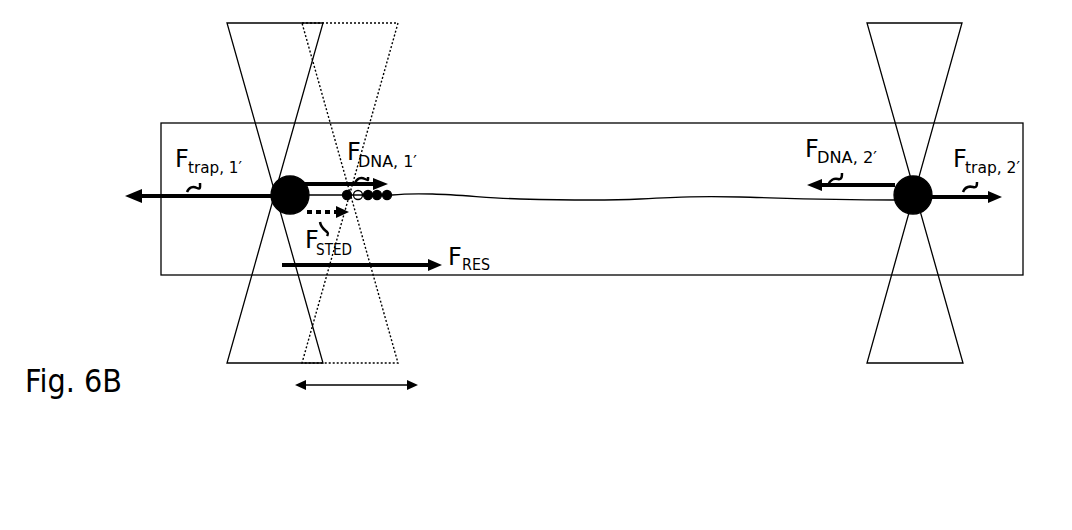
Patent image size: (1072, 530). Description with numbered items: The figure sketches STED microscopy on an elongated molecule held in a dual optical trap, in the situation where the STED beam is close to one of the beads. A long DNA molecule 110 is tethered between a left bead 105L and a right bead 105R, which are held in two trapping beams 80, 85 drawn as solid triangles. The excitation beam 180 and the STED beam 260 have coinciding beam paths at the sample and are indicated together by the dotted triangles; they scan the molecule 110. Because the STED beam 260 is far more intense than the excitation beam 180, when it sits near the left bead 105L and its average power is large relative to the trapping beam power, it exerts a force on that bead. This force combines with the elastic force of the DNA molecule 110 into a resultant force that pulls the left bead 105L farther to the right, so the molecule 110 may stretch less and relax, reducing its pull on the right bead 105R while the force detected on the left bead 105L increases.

The trapping beam 80 is at (275, 193).
The trapping beam 85 is at (915, 193).
The excitation beam 180 is at (417, 193).
The STED beam 260 is at (383, 60).
The DNA molecule 110 is at (638, 200).
The left bead 105L is at (272, 210).
The right bead 105R is at (897, 220).